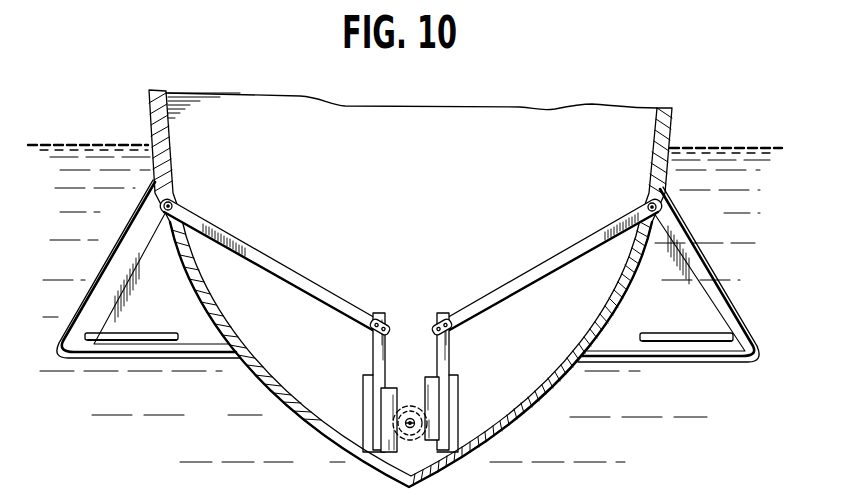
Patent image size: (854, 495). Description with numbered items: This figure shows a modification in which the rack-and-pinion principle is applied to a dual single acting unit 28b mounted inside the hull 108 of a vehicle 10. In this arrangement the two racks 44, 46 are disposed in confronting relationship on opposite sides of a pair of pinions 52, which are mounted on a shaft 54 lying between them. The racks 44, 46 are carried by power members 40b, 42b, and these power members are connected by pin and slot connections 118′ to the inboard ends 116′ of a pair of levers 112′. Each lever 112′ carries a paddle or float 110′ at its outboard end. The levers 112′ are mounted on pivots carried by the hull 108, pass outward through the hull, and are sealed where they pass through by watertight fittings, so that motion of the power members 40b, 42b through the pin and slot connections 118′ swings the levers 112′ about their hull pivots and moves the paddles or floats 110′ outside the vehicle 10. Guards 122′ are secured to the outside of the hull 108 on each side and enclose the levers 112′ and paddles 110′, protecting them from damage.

The vehicle 10 is at (148, 115).
The hull 108 is at (672, 125).
The inboard ends 116′ is at (288, 268).
The pin and slot connections 118′ is at (370, 327).
The dual single acting unit 28b is at (413, 328).
The power member 40b is at (370, 400).
The power member 42b is at (451, 397).
The rack 44 is at (391, 388).
The rack 46 is at (426, 377).
The pinions 52 is at (396, 422).
The shaft 54 is at (420, 425).
The guards 122′ is at (96, 276).
The levers 112′ is at (130, 282).
The paddles or floats 110′ is at (155, 341).